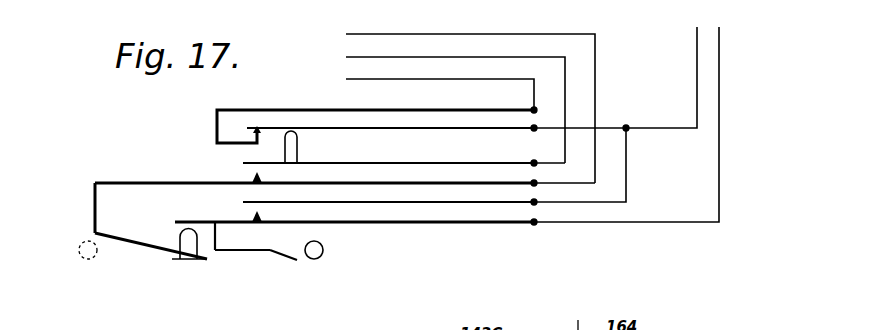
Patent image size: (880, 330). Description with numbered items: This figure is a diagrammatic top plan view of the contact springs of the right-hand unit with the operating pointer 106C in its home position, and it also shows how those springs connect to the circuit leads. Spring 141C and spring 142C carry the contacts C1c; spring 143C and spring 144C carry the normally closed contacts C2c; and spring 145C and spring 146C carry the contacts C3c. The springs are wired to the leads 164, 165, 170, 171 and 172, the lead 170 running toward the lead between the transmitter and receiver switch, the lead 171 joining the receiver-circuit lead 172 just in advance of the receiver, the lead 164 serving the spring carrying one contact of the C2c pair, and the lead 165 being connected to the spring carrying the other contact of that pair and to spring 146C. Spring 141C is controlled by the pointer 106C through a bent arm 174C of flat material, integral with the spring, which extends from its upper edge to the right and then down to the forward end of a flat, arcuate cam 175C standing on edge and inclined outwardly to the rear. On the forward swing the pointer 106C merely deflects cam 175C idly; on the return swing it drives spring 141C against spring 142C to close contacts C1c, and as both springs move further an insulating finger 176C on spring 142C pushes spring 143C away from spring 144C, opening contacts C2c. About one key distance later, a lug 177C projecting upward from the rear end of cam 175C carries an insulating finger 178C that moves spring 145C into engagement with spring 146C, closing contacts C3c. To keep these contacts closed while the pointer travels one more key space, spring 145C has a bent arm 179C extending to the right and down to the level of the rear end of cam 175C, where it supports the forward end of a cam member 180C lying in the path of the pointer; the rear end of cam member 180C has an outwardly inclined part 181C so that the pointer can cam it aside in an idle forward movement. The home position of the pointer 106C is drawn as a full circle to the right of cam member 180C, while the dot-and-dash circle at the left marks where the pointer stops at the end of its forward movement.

The lead 171 is at (500, 57).
The lead 170 is at (598, 55).
The lead 164 is at (432, 79).
The lead 165 is at (660, 128).
The lead 172 is at (720, 183).
The spring 143C is at (437, 112).
The spring 144C is at (400, 129).
The spring 142C is at (382, 164).
The spring 141C is at (368, 184).
The spring 146C is at (493, 203).
The spring 145C is at (475, 223).
The bent arm 174C is at (93, 204).
The cam 175C is at (150, 247).
The finger 176C is at (298, 150).
The lug 177C is at (177, 262).
The finger 178C is at (180, 233).
The bent arm 179C is at (218, 240).
The cam member 180C is at (253, 252).
The inclined part 181C is at (288, 260).
The pointer 106C is at (320, 259).
The contacts C1c is at (247, 175).
The contacts C2c is at (243, 134).
The contacts C3c is at (247, 211).